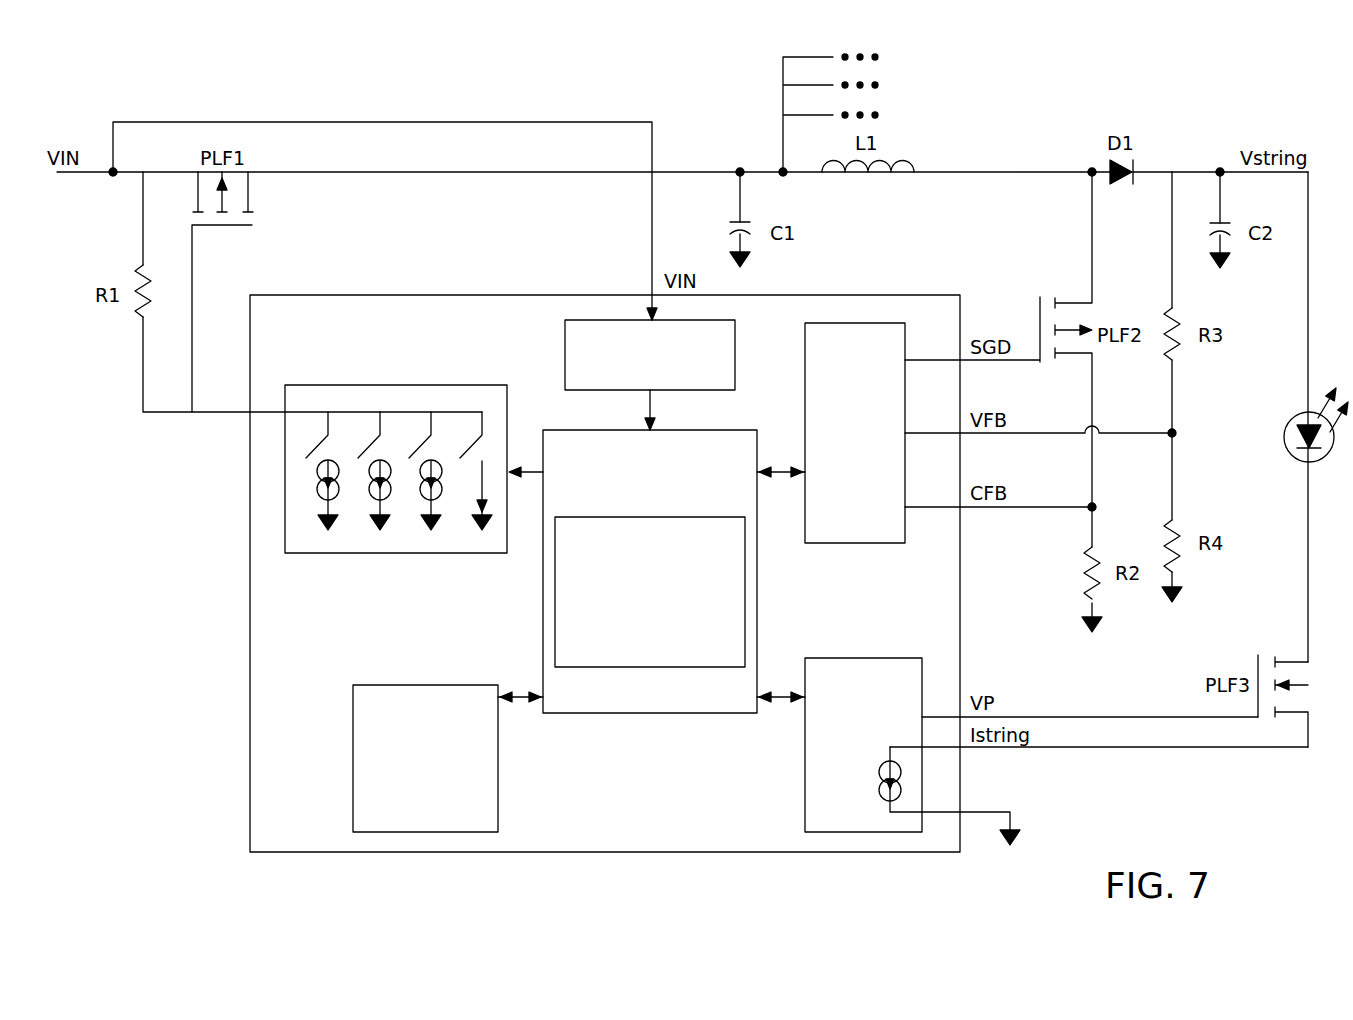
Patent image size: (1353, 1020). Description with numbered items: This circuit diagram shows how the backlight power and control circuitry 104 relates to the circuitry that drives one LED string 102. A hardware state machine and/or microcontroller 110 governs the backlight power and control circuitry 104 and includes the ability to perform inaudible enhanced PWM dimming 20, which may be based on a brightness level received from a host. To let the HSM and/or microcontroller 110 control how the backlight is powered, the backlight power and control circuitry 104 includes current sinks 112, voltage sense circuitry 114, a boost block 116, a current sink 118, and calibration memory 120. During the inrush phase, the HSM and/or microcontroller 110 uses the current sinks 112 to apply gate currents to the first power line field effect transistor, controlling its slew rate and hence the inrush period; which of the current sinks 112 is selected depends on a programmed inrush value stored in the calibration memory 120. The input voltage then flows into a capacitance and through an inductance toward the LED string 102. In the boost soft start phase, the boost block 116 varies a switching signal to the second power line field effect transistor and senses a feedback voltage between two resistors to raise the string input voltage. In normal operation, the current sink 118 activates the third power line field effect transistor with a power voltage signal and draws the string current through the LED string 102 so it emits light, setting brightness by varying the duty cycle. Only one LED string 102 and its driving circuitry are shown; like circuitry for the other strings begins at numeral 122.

The inaudible enhanced PWM dimming 20 is at (628, 517).
The LED string 102 is at (1284, 428).
The backlight power and control circuitry 104 is at (250, 655).
The hardware state machine and/or microcontroller 110 is at (637, 713).
The current sinks 112 is at (385, 553).
The voltage sense circuitry 114 is at (725, 390).
The boost block 116 is at (877, 543).
The current sink 118 is at (858, 658).
The calibration memory 120 is at (425, 685).
The start of like circuitry for other LED strings 122 is at (765, 97).